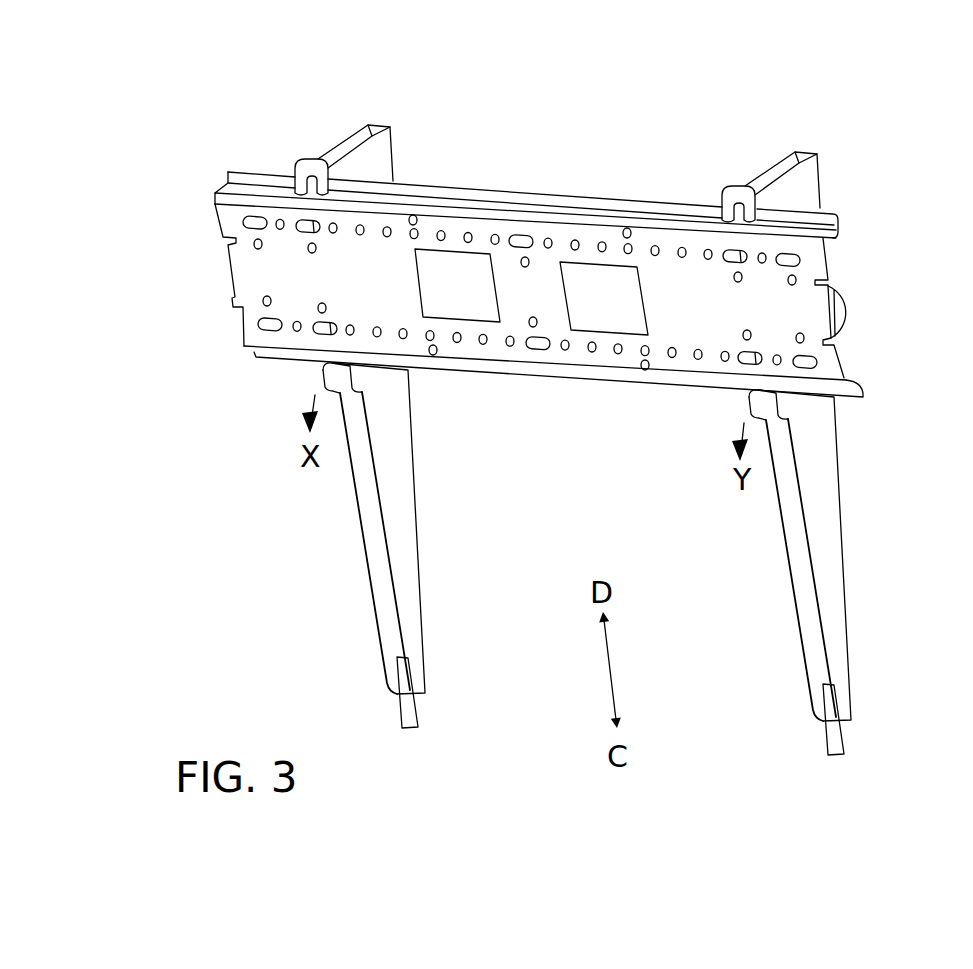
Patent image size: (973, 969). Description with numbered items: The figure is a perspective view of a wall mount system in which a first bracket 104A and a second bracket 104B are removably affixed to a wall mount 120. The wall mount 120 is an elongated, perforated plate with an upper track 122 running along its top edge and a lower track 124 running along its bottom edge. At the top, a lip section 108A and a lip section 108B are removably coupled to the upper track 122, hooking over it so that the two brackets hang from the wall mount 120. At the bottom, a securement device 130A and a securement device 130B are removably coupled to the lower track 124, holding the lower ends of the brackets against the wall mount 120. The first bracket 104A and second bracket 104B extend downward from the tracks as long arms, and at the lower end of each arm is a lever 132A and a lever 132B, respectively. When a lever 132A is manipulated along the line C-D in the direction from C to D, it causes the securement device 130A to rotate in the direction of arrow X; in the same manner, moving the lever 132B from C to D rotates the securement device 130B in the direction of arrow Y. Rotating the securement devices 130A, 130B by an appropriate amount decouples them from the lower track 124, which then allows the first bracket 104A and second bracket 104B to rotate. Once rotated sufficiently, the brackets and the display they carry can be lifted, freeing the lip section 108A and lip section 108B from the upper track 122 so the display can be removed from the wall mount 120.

The first bracket 104A is at (405, 525).
The second bracket 104B is at (823, 487).
The lip section 108A is at (301, 148).
The lip section 108B is at (733, 181).
The wall mount 120 is at (472, 343).
The upper track 122 is at (560, 193).
The lower track 124 is at (550, 373).
The securement device 130A is at (330, 367).
The securement device 130B is at (757, 394).
The lever 132A is at (415, 717).
The lever 132B is at (842, 748).